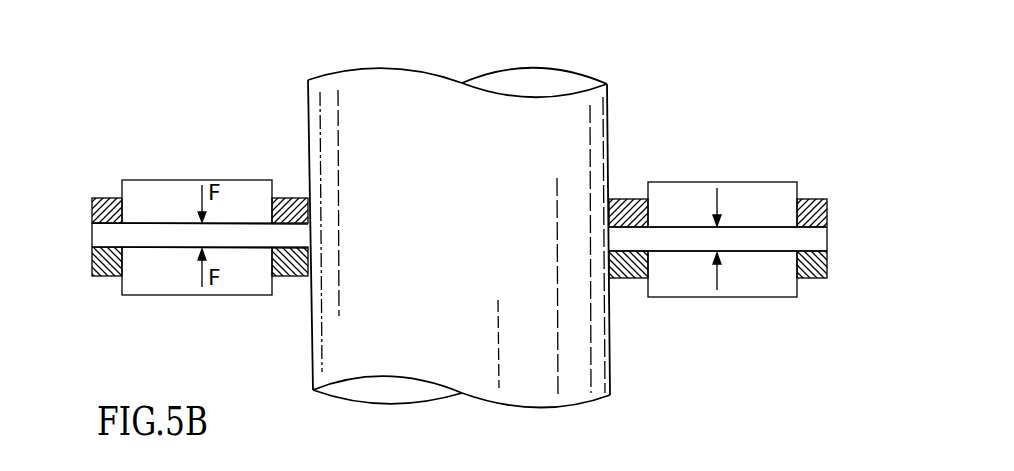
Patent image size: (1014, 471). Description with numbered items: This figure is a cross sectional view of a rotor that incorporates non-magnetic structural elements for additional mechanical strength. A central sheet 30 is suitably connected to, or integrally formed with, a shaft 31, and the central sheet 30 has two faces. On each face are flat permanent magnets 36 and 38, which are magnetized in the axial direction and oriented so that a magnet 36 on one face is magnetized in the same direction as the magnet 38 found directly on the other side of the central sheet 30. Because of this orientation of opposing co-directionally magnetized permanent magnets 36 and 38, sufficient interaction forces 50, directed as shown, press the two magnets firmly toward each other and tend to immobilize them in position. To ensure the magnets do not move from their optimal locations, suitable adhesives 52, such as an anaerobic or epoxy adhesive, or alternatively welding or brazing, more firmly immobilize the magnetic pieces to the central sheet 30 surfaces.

The central sheet 30 is at (815, 238).
The shaft 31 is at (568, 137).
The permanent magnet 36 is at (676, 200).
The permanent magnet 38 is at (675, 282).
The interaction forces 50 is at (740, 278).
The adhesives 52 is at (828, 208).